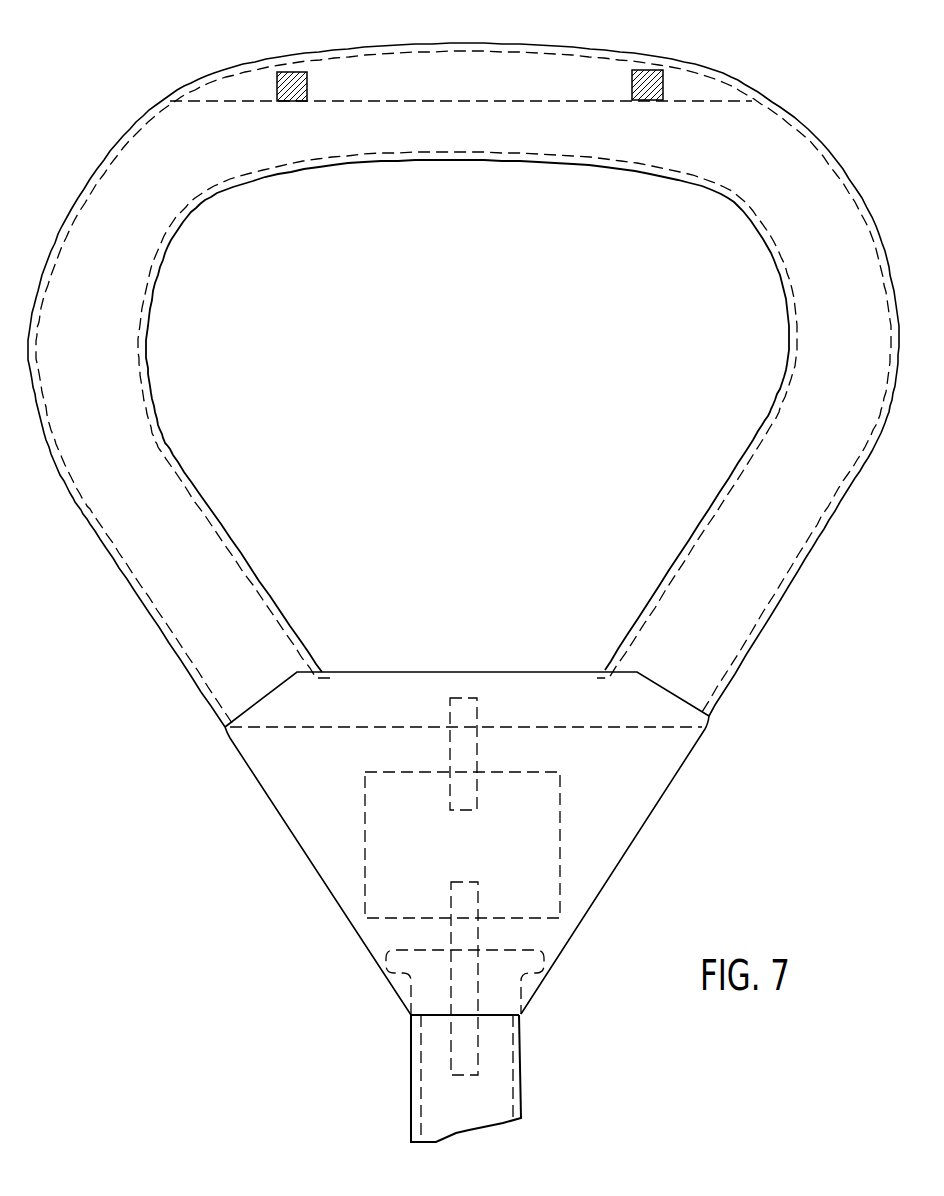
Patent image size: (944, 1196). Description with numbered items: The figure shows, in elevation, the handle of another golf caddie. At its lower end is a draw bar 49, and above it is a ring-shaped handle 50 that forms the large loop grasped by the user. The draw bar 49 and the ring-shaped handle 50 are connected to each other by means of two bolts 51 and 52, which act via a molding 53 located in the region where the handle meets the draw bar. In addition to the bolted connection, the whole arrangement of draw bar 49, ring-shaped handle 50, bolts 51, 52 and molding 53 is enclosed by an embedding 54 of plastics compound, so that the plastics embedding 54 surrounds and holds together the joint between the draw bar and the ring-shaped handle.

The draw bar 49 is at (498, 1093).
The ring-shaped handle 50 is at (227, 565).
The bolt 51 is at (471, 1043).
The bolt 52 is at (475, 743).
The molding 53 is at (551, 895).
The embedding of plastics compound 54 is at (601, 798).